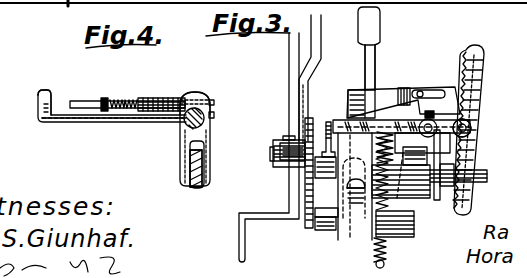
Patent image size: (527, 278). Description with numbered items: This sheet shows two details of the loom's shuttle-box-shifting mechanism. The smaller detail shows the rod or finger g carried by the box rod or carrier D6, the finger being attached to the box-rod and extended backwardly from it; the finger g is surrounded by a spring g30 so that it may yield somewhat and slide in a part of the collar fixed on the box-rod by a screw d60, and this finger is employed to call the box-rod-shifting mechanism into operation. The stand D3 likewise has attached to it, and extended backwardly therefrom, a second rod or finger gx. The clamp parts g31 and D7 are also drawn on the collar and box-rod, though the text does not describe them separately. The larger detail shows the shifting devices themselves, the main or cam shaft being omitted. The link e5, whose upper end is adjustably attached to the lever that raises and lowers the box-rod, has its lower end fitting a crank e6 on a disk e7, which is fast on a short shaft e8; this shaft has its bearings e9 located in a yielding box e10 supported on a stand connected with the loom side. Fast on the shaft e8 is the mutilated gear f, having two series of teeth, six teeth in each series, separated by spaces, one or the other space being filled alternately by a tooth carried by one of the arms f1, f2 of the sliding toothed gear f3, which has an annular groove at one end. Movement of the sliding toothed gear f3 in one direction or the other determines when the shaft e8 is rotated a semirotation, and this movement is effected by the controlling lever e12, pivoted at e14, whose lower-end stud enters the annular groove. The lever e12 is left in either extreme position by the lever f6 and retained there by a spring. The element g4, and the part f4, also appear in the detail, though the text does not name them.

In FIG. 4, the lever f6 is at (50, 78).
In FIG. 3, the lever f6 is at (370, 69).
In FIG. 4, the rod or finger g is at (101, 91).
In FIG. 4, the second rod or finger gx is at (103, 121).
In FIG. 4, the spring g30 is at (155, 87).
In FIG. 4, the box rod or carrier D6 is at (197, 112).
In FIG. 4, the clamp bore g31 is at (203, 97).
In FIG. 4, the screw d60 is at (215, 115).
In FIG. 4, the clamp slot D7 is at (208, 157).
In FIG. 4, the stand D3 is at (190, 162).
In FIG. 3, the link e5 is at (365, 47).
In FIG. 3, the lever plate g4 is at (407, 78).
In FIG. 3, the lever e12 is at (466, 72).
In FIG. 3, the bearings e9 is at (333, 130).
In FIG. 3, the crank e6 is at (277, 152).
In FIG. 3, the disk e7 is at (308, 177).
In FIG. 3, the yielding box e10 is at (347, 210).
In FIG. 3, the pivot e14 is at (470, 129).
In FIG. 3, the arm f1 is at (515, 131).
In FIG. 3, the gear f4 is at (401, 173).
In FIG. 3, the short shaft e8 is at (470, 174).
In FIG. 3, the sliding toothed gear f3 is at (470, 199).
In FIG. 3, the arm f2 is at (417, 197).
In FIG. 3, the mutilated gear f is at (388, 268).